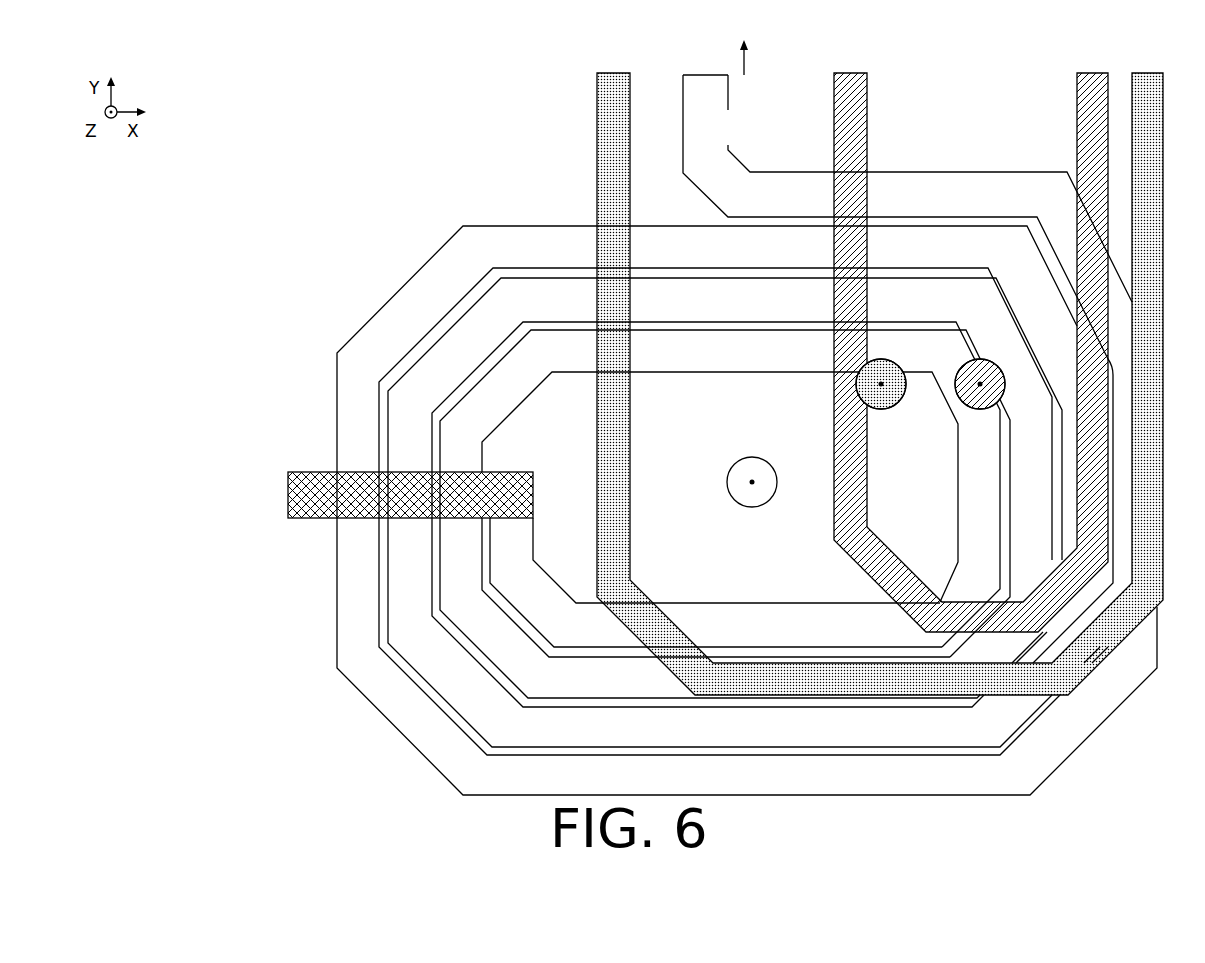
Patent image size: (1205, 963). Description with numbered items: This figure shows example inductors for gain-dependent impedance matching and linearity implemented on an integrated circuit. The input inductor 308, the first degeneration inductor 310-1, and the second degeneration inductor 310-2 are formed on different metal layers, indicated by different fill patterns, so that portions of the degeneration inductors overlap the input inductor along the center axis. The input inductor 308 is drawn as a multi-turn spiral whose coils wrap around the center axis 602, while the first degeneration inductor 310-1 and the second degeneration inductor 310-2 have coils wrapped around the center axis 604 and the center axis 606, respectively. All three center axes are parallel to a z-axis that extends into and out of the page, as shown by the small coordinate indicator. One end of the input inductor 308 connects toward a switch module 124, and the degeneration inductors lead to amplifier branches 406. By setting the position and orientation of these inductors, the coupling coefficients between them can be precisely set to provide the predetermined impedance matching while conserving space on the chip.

The input inductor 308 is at (398, 290).
The first degeneration inductor 310-1 is at (597, 157).
The second degeneration inductor 310-2 is at (834, 157).
The center axis 602 is at (753, 507).
The center axis 604 is at (873, 362).
The center axis 606 is at (978, 410).
The switch module terminal 124 is at (268, 498).
The amplifier branches terminal 406 is at (879, 57).